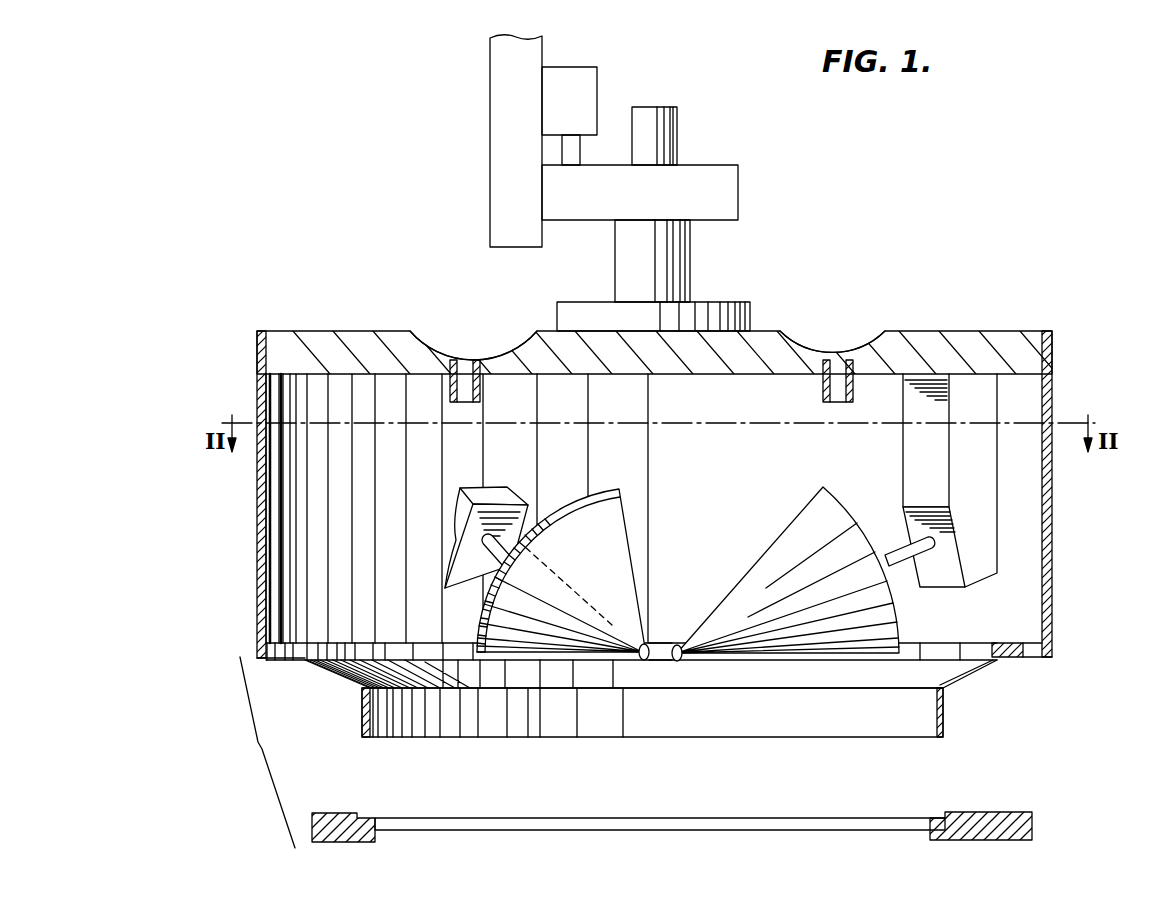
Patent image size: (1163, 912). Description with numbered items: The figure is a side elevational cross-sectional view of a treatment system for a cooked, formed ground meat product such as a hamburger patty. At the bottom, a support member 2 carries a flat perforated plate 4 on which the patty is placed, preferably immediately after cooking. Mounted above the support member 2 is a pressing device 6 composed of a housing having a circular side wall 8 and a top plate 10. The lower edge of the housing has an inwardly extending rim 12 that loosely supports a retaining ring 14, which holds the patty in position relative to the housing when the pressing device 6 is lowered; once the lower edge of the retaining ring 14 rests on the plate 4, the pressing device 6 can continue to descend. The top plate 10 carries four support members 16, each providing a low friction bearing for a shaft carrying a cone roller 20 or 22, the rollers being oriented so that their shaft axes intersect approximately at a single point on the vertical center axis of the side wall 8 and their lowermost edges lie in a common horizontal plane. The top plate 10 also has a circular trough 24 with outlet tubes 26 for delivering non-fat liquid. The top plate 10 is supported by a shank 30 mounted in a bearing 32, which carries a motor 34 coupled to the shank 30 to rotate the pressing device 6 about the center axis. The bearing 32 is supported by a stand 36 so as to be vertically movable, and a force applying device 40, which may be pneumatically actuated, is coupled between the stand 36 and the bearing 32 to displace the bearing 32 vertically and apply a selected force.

The support member 2 is at (673, 818).
The flat perforated plate 4 is at (868, 830).
The pressing device 6 is at (699, 497).
The circular side wall 8 is at (1050, 396).
The top plate 10 is at (940, 332).
The inwardly extending rim 12 is at (1017, 660).
The retaining ring 14 is at (340, 670).
The support member 16 is at (475, 492).
The cone roller 20 is at (773, 548).
The cone roller 22 is at (632, 532).
The circular trough 24 is at (442, 342).
The outlet tube 26 is at (482, 388).
The shank 30 is at (690, 250).
The bearing 32 is at (738, 187).
The motor 34 is at (677, 128).
The stand 36 is at (490, 147).
The force applying device 40 is at (597, 99).